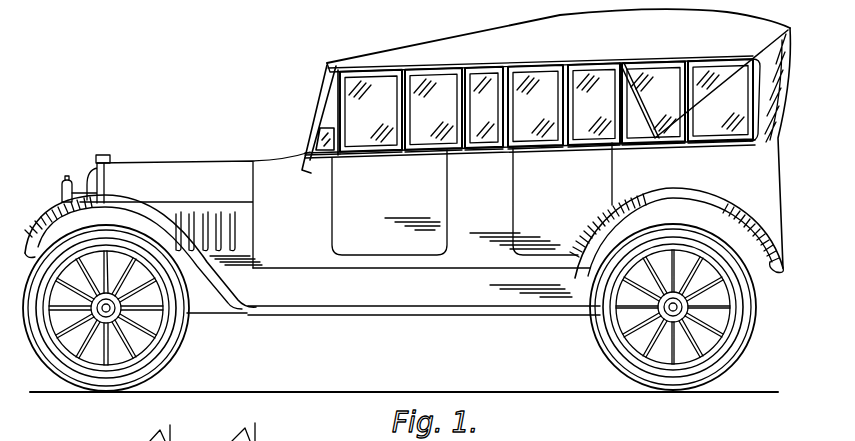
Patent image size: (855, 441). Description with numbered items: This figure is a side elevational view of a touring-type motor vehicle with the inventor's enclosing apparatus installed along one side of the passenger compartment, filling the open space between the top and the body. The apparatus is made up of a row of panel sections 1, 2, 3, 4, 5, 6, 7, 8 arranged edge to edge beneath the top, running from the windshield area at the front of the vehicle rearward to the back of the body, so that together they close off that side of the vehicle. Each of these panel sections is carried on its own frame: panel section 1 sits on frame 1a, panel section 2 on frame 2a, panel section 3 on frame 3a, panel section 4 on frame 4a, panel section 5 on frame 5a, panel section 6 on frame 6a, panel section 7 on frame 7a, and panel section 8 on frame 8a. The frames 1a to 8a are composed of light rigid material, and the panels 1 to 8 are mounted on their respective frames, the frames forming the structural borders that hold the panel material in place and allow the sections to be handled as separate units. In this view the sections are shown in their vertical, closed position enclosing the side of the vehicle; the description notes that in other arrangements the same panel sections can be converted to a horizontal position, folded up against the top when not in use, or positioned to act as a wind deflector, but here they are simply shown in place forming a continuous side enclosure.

The panel section 1 is at (318, 125).
The panel section 2 is at (371, 111).
The panel section 3 is at (433, 109).
The panel section 4 is at (484, 107).
The panel section 5 is at (535, 106).
The panel section 6 is at (594, 104).
The panel section 7 is at (653, 102).
The panel section 8 is at (720, 100).
The frame 1a is at (316, 159).
The frame 2a is at (371, 158).
The frame 3a is at (418, 156).
The frame 4a is at (486, 153).
The frame 5a is at (527, 152).
The frame 6a is at (584, 151).
The frame 7a is at (638, 150).
The frame 8a is at (709, 149).